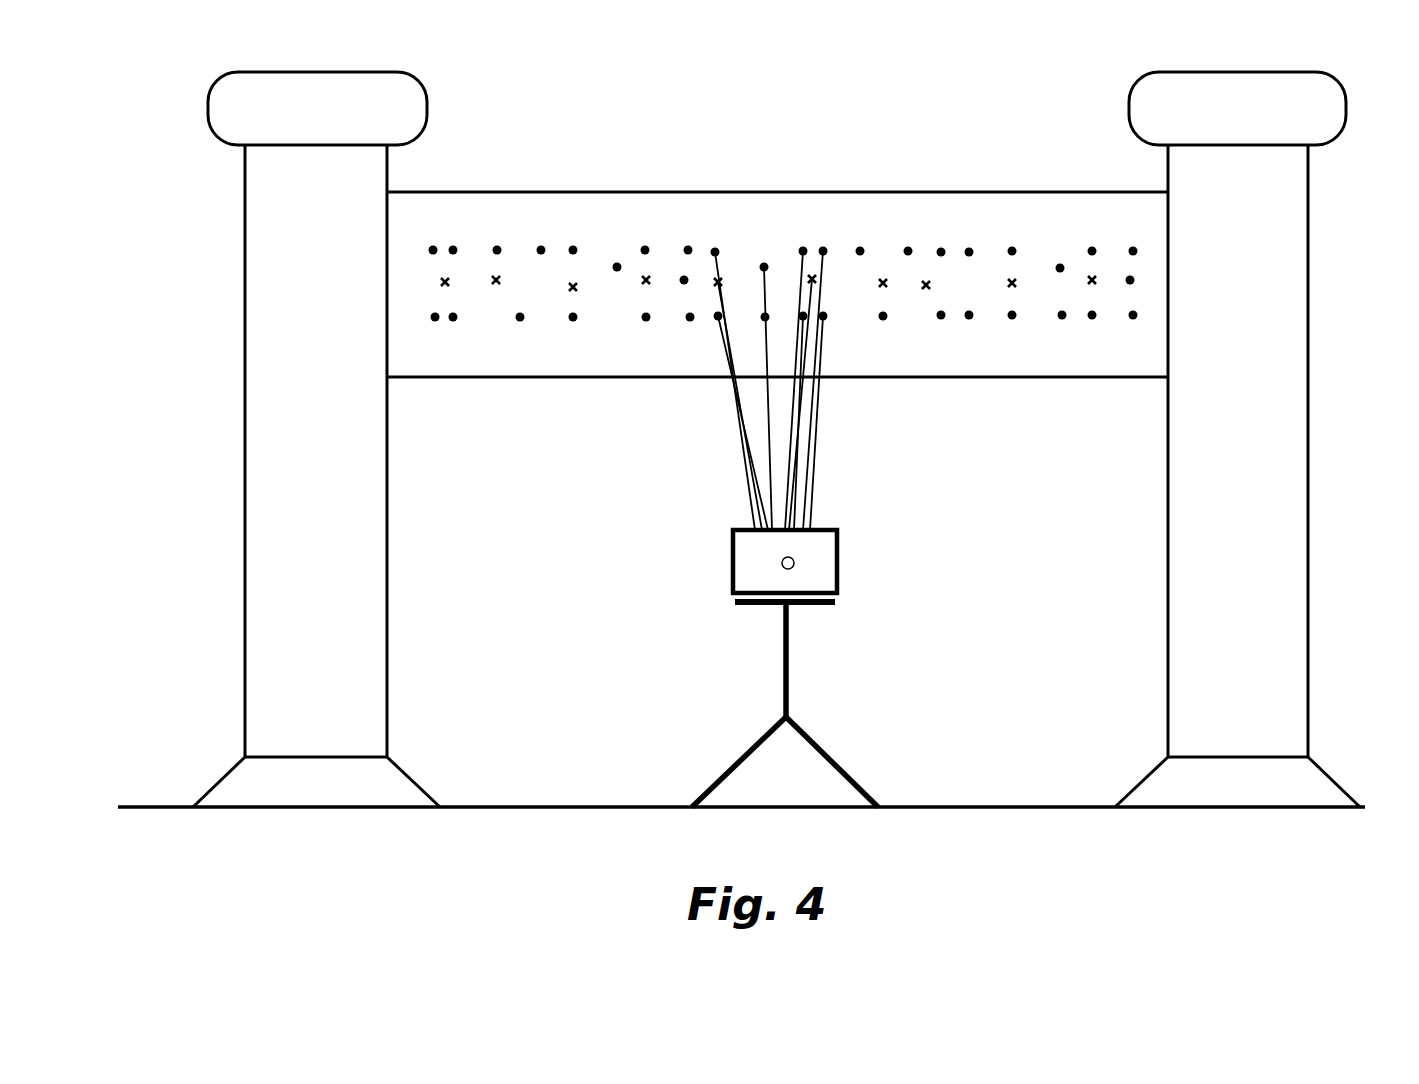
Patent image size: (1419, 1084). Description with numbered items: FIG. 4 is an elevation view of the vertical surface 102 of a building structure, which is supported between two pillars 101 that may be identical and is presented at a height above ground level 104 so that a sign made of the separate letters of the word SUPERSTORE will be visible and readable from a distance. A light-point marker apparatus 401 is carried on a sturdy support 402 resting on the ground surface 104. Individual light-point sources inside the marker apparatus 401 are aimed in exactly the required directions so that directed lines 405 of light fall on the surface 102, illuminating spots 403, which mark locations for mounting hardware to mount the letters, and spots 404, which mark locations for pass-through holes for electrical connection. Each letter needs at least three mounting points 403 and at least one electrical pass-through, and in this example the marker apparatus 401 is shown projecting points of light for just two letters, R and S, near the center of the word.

The pillars 101 is at (250, 280).
The surface 102 is at (986, 189).
The ground level 104 is at (178, 804).
The light-point marker apparatus 401 is at (843, 568).
The support 402 is at (780, 683).
The spots 403 is at (718, 280).
The spots 404 is at (926, 283).
The lines 405 is at (732, 414).